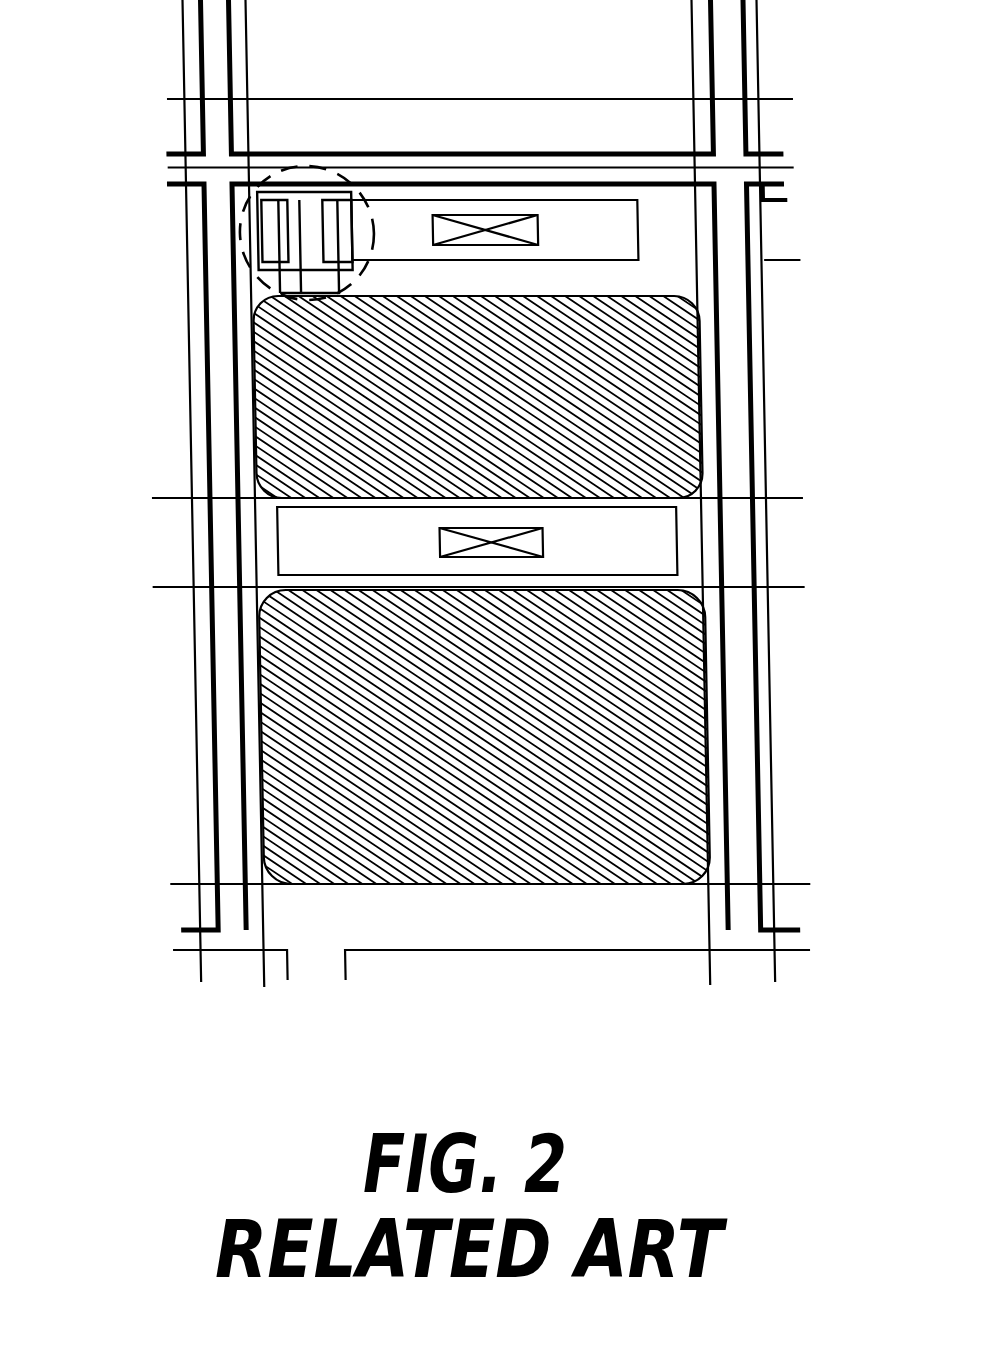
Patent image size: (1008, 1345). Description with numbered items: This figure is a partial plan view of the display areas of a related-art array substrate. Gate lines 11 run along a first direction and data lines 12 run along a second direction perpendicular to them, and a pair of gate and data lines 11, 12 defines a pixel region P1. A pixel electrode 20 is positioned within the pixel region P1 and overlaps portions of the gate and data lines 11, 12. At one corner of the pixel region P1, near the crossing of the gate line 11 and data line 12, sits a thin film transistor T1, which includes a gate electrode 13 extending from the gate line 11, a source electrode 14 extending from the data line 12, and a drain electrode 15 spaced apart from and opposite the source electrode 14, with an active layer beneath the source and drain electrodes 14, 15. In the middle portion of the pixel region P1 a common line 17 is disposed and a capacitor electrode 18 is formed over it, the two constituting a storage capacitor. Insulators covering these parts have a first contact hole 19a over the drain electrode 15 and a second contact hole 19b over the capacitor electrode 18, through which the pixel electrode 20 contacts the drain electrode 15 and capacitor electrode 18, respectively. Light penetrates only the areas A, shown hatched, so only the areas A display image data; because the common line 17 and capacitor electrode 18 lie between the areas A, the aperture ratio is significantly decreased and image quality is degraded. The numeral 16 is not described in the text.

The gate line 11 is at (596, 168).
The data line 12 is at (768, 420).
The gate electrode 13 is at (322, 294).
The source electrode 14 is at (301, 230).
The drain electrode 15 is at (333, 235).
The drain electrode 16 is at (300, 294).
The common line 17 is at (296, 701).
The capacitor electrode 18 is at (585, 578).
The first contact hole 19a is at (482, 245).
The second contact hole 19b is at (506, 527).
The pixel electrode 20 is at (510, 152).
The thin film transistor T1 is at (254, 268).
The area A is at (448, 596).
The pixel region P1 is at (556, 596).